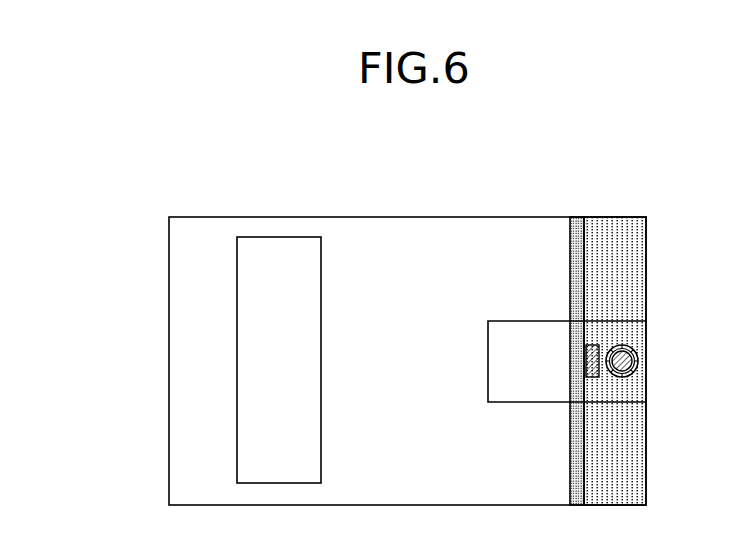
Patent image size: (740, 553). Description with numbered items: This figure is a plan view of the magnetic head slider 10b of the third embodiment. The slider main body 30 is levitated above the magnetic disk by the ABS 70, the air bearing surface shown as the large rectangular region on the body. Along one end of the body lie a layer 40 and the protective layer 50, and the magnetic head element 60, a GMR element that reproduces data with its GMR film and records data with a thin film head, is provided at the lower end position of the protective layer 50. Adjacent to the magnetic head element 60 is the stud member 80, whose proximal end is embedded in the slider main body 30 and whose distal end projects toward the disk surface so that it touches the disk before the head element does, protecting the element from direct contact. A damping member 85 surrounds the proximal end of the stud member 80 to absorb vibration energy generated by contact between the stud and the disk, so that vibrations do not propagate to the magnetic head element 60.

The magnetic head slider 10b is at (475, 200).
The slider main body 30 is at (340, 217).
The adhesive layer 40 is at (578, 217).
The protective layer 50 is at (637, 242).
The magnetic head element 60 is at (593, 378).
The ABS (air bearing surface) 70 is at (257, 485).
The stud member 80 is at (655, 340).
The damping member 85 is at (636, 348).